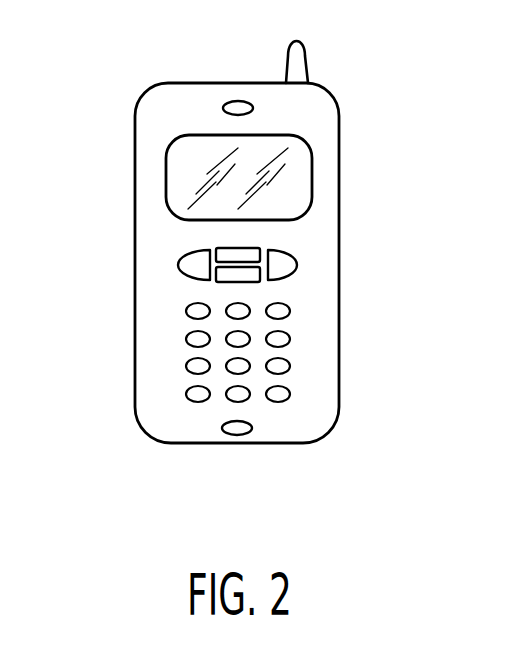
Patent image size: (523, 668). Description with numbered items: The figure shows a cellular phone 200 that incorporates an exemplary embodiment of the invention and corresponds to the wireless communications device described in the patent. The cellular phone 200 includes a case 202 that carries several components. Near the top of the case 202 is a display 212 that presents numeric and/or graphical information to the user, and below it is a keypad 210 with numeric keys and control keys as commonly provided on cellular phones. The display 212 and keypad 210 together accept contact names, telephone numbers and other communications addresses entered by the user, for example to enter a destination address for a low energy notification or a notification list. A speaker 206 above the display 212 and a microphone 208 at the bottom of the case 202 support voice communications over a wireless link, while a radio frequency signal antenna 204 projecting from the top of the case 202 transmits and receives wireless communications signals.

The cellular phone 200 is at (360, 532).
The case 202 is at (339, 363).
The radio frequency signal antenna 204 is at (310, 63).
The speaker 206 is at (241, 100).
The microphone 208 is at (237, 436).
The keypad 210 is at (165, 358).
The display 212 is at (166, 178).